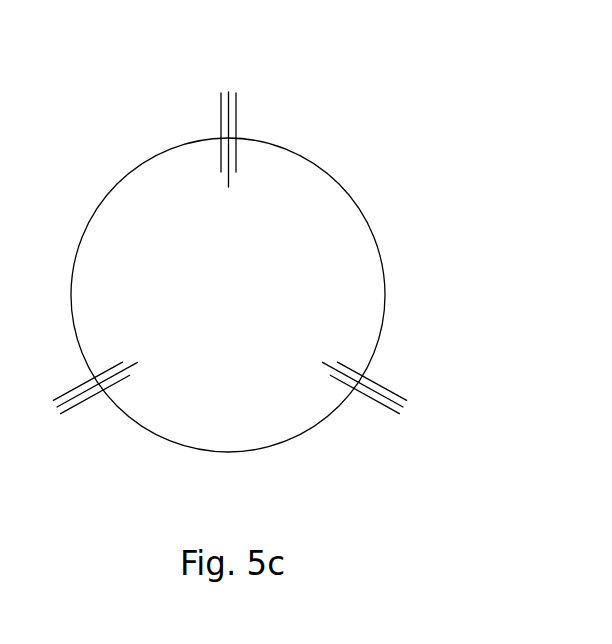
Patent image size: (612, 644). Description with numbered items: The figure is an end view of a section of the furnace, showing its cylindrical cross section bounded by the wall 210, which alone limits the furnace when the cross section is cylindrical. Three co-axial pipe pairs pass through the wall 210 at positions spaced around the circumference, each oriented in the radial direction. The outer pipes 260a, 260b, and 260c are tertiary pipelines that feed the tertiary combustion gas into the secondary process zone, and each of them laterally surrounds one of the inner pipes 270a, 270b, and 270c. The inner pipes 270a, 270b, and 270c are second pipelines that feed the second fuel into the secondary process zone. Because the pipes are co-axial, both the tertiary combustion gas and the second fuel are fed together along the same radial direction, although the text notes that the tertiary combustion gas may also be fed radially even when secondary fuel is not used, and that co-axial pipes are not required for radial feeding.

The wall 210 is at (294, 152).
The tertiary pipeline 260a is at (217, 107).
The tertiary pipeline 260b is at (83, 401).
The tertiary pipeline 260c is at (375, 403).
The second pipeline 270a is at (229, 92).
The second pipeline 270b is at (56, 408).
The second pipeline 270c is at (403, 408).